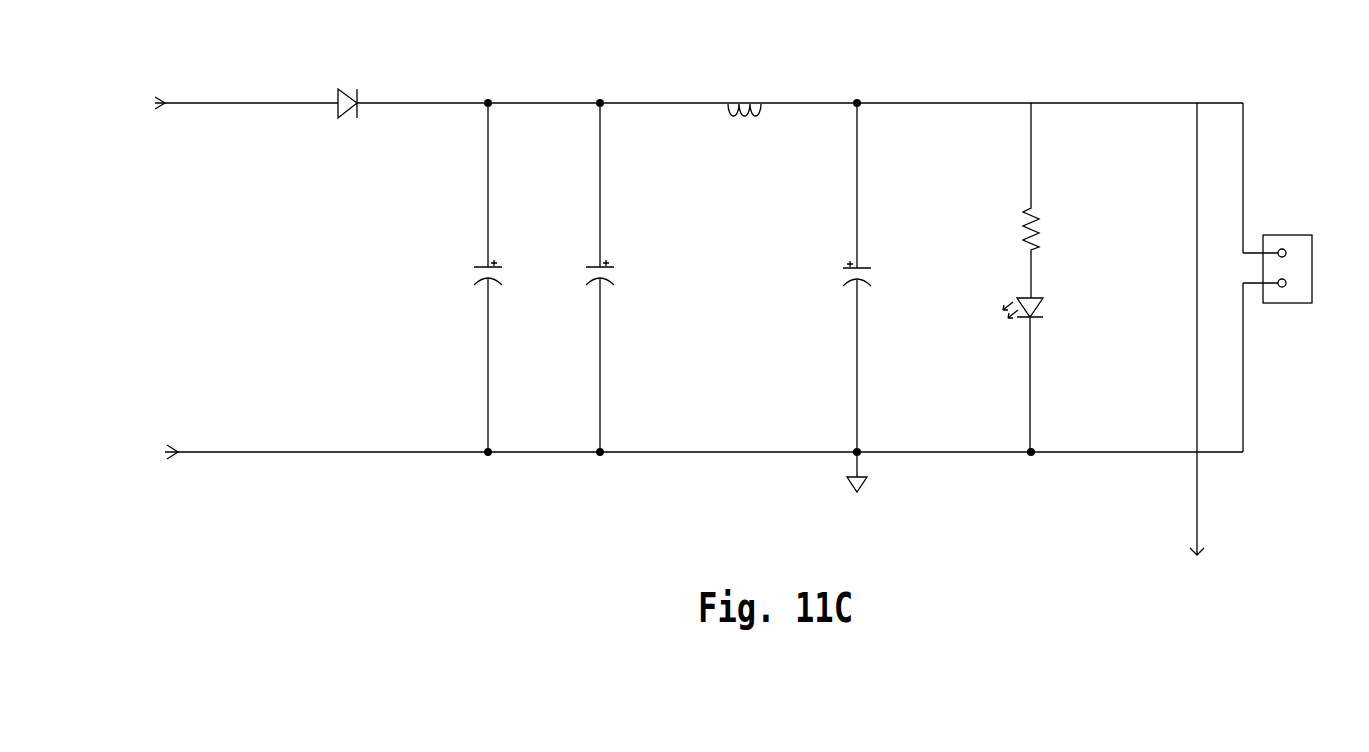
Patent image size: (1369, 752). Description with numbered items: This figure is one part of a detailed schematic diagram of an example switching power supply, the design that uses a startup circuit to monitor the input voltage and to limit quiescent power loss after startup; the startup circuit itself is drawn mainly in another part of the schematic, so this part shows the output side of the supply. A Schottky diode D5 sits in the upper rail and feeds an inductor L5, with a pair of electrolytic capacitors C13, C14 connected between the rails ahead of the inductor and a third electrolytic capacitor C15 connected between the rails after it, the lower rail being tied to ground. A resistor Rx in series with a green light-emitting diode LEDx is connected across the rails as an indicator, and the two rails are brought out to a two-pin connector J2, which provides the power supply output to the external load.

The Schottky diode MBR10100G (100V, 10A) D5 is at (361, 95).
The inductor L5 is at (744, 124).
The electrolytic capacitor 1000uF 35V (Vishay MAL214230102E3) C13 is at (481, 277).
The electrolytic capacitor 1000uF 35V (Vishay MAL214230102E3) C14 is at (590, 277).
The electrolytic capacitor 220uF 35V (Vishay MAL214270221E3) C15 is at (867, 277).
The resistor 3.63K Rx is at (1065, 200).
The green LED T1.75 LEDx is at (1094, 365).
The two-pin connector J2 is at (1277, 259).